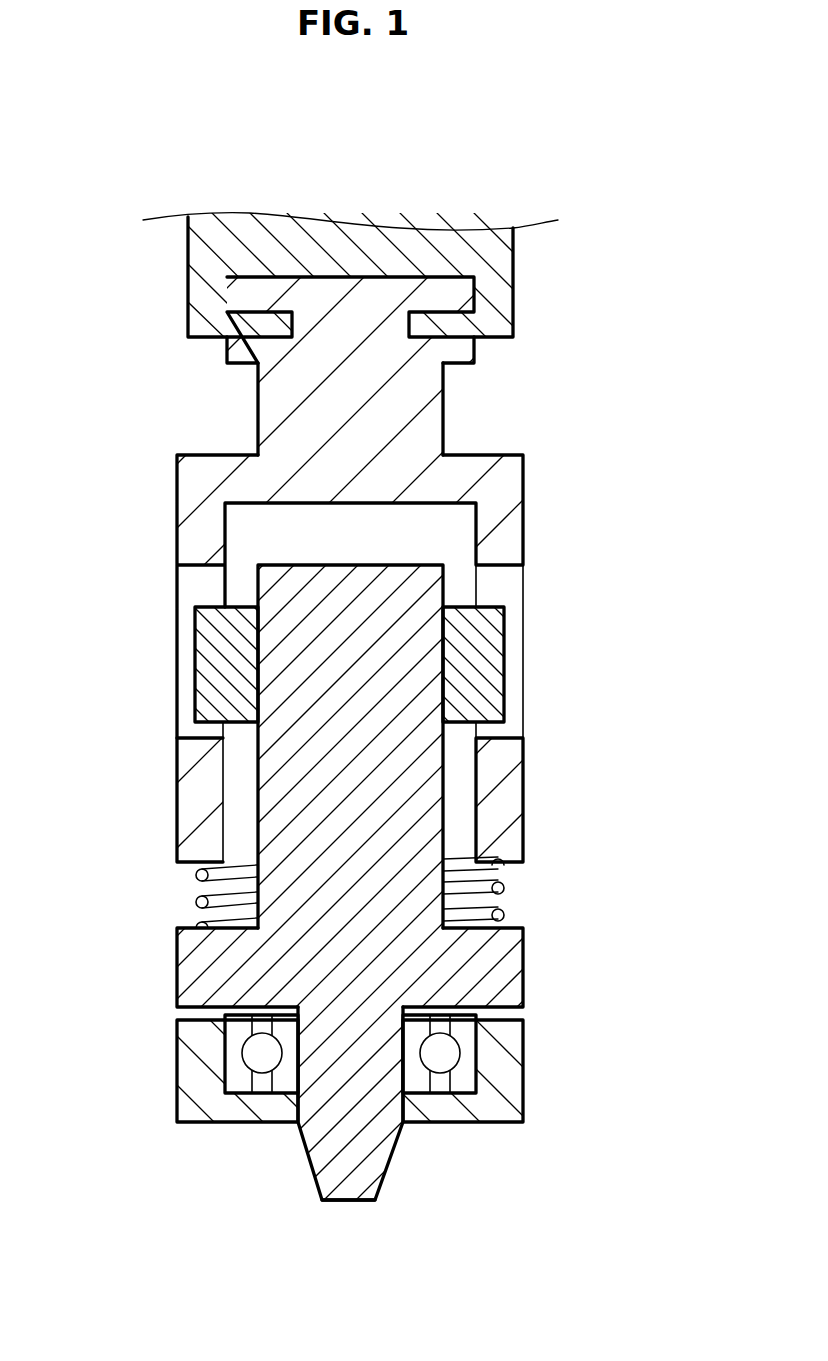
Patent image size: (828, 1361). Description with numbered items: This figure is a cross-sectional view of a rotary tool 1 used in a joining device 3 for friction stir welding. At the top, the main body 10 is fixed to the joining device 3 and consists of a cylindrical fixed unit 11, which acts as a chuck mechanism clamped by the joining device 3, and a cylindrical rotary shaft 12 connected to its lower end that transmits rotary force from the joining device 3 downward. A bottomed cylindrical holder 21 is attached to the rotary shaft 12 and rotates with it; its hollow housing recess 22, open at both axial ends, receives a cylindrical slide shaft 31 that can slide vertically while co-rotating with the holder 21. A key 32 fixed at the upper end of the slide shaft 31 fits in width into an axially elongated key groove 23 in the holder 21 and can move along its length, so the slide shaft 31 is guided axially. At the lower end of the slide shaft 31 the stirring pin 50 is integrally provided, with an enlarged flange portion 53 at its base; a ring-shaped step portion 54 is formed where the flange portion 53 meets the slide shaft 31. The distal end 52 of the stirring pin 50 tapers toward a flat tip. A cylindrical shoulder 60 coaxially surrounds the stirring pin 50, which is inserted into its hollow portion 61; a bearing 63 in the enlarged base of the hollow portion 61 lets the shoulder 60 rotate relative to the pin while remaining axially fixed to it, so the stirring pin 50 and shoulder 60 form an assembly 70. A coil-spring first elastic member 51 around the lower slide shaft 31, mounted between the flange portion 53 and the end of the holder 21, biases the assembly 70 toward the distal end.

The rotary tool 1 is at (373, 569).
The joining device 3 is at (222, 249).
The main body 10 is at (335, 569).
The fixed unit 11 is at (353, 322).
The rotary shaft 12 is at (437, 430).
The holder 21 is at (505, 532).
The housing recess 22 is at (475, 768).
The key groove 23 is at (208, 570).
The slide shaft 31 is at (346, 916).
The key 32 is at (230, 678).
The stirring pin 50 is at (382, 1137).
The first elastic member 51 is at (198, 903).
The distal end 52 is at (378, 1153).
The flange portion 53 is at (472, 968).
The step portion 54 is at (200, 927).
The shoulder 60 is at (230, 1112).
The hollow portion 61 is at (237, 1076).
The bearing 63 is at (468, 1060).
The assembly 70 is at (346, 1170).